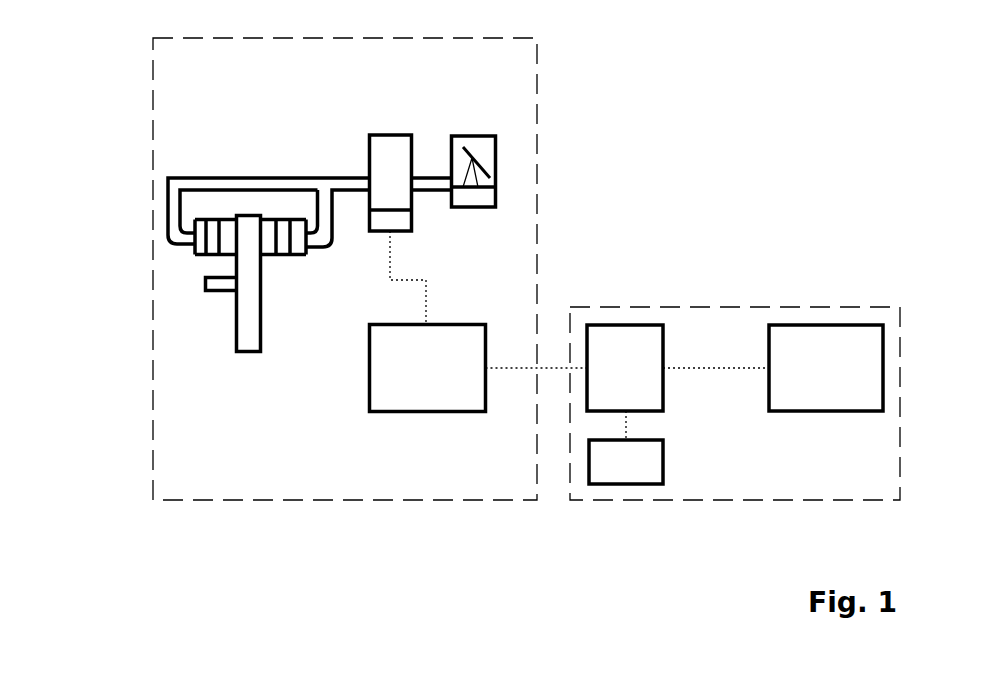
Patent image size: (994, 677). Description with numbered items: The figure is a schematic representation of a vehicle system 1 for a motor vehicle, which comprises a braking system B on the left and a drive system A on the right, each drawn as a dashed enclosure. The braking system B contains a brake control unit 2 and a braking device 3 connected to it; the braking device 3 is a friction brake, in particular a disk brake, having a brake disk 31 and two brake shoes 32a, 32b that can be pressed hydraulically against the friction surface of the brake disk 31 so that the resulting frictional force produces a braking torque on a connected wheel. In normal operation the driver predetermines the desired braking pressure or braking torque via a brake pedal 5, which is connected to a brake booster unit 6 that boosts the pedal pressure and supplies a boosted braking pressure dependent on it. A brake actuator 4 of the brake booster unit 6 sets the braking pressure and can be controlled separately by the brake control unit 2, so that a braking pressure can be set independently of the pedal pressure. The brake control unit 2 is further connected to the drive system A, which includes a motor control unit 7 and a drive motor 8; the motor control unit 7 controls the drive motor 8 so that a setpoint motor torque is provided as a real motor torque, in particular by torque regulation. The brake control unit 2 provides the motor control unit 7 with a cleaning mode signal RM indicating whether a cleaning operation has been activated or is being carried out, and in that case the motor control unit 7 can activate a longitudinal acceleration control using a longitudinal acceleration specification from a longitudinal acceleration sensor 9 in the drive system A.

The vehicle system 1 is at (645, 88).
The brake control unit 2 is at (434, 383).
The braking device 3 is at (266, 146).
The brake actuator 4 is at (412, 222).
The brake pedal 5 is at (470, 135).
The brake booster unit 6 is at (388, 134).
The motor control unit 7 is at (633, 382).
The drive motor 8 is at (833, 382).
The longitudinal acceleration sensor 9 is at (633, 476).
The brake disk 31 is at (260, 307).
The brake shoe 32a is at (198, 225).
The brake shoe 32b is at (296, 222).
The drive system A is at (734, 306).
The braking system B is at (537, 224).
The cleaning mode signal RM is at (537, 353).